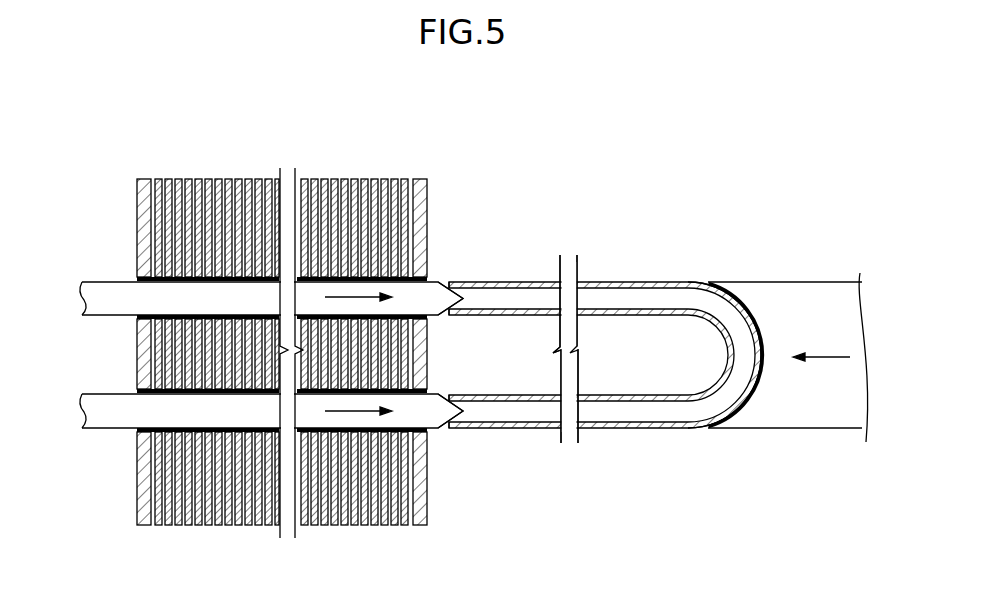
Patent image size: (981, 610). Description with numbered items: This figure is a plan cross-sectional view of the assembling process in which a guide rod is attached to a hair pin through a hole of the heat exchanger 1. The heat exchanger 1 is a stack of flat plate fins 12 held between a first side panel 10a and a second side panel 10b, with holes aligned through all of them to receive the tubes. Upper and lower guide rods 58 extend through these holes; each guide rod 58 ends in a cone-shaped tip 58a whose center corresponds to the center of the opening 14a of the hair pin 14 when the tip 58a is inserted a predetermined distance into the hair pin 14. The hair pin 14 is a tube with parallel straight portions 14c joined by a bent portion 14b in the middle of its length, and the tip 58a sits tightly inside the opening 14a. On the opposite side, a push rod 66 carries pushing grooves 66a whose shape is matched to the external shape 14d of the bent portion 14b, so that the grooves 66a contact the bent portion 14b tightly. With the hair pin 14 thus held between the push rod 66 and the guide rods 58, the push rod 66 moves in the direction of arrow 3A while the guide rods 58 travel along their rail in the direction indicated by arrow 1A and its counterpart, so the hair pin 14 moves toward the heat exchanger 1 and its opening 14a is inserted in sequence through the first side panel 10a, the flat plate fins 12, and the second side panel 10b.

The heat exchanger 1 is at (313, 322).
The arrow 1A is at (363, 294).
The first side panel 10a is at (428, 192).
The second side panel 10b is at (143, 178).
The flat plate fins 12 is at (210, 178).
The hair pin tube 14 is at (684, 430).
The opening 14a is at (448, 281).
The bent portion 14b is at (742, 392).
The straight portion 14c is at (597, 280).
The external shape of bent portion 14d is at (760, 340).
The arrow 3A is at (832, 358).
The guide rod 58 is at (82, 315).
The tip 58a is at (436, 432).
The push rod 66 is at (820, 283).
The pushing groove 66a is at (709, 289).